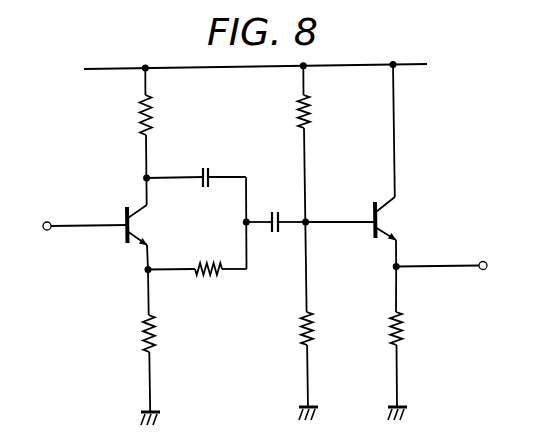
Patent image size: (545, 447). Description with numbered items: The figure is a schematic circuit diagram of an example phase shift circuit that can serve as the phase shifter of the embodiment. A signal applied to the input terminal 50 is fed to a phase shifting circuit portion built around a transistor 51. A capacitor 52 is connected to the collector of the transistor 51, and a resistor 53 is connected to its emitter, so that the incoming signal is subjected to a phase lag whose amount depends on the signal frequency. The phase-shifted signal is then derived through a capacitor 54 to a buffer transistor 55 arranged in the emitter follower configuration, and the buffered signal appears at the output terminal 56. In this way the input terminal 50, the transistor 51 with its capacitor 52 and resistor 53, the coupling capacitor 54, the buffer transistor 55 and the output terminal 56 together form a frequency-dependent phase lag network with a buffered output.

The input terminal 50 is at (47, 221).
The transistor 51 is at (124, 232).
The capacitor 52 is at (204, 163).
The resistor 53 is at (209, 282).
The capacitor 54 is at (275, 208).
The buffer transistor 55 is at (370, 210).
The output terminal 56 is at (482, 260).